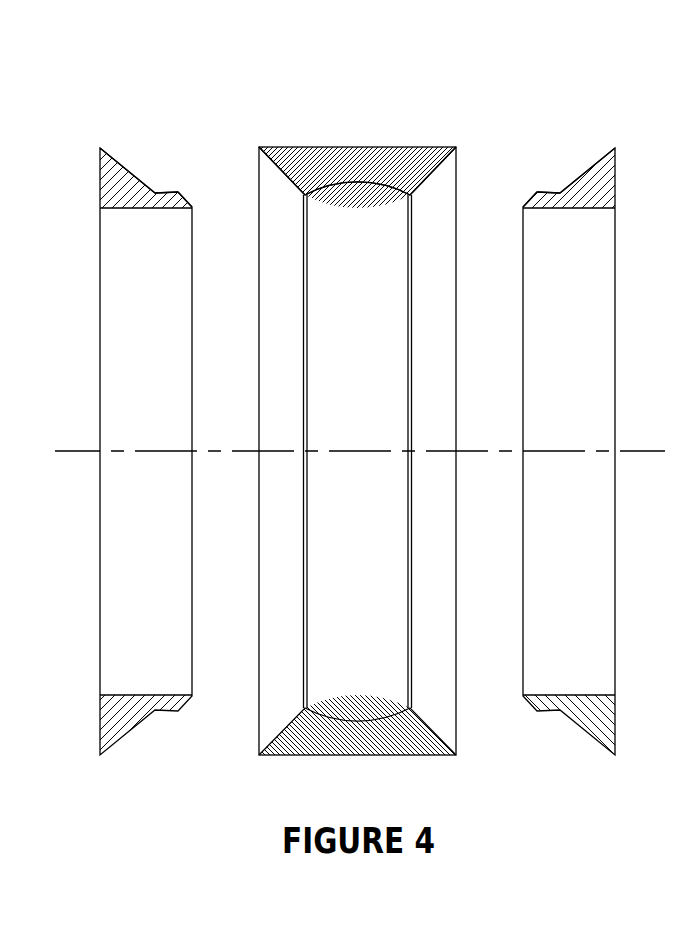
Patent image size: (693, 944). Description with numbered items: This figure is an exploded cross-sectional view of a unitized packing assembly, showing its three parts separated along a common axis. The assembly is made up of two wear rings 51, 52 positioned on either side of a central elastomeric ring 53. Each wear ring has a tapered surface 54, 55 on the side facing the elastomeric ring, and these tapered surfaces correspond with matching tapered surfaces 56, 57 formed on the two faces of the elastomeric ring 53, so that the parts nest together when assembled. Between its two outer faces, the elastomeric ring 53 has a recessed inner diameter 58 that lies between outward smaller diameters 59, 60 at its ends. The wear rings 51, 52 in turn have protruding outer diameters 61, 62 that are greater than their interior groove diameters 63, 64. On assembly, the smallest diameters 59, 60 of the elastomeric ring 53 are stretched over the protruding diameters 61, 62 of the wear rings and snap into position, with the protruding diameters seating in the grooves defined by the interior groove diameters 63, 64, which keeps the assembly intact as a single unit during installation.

The wear ring 51 is at (115, 188).
The wear ring 52 is at (610, 168).
The central elastomeric ring 53 is at (315, 155).
The tapered surface 54 is at (117, 157).
The tapered surface 55 is at (597, 162).
The tapered surface 56 is at (305, 194).
The tapered surface 57 is at (422, 182).
The recessed inner diameter 58 is at (358, 183).
The outward smaller diameter 59 is at (305, 197).
The outward smaller diameter 60 is at (411, 198).
The protruding outer diameter 61 is at (180, 193).
The protruding outer diameter 62 is at (540, 190).
The interior groove diameter 63 is at (157, 193).
The interior groove diameter 64 is at (560, 194).